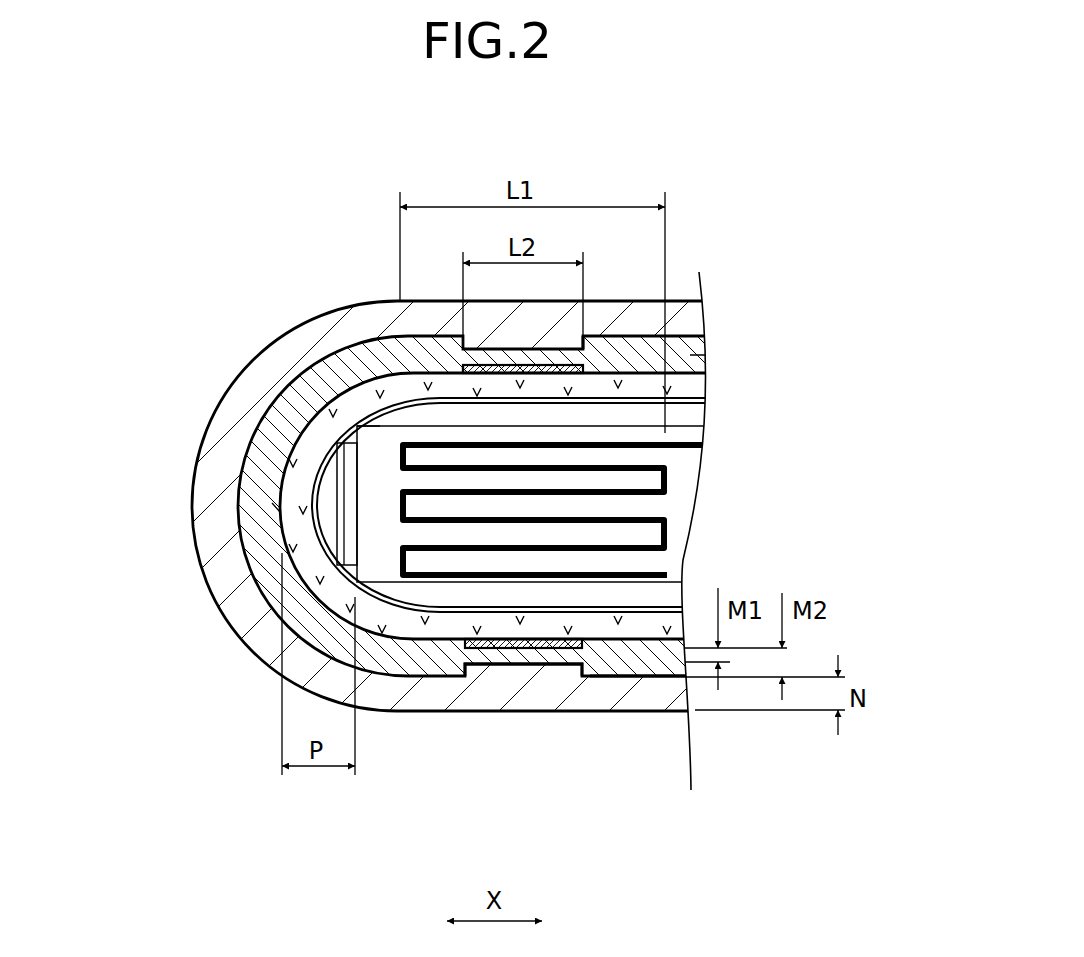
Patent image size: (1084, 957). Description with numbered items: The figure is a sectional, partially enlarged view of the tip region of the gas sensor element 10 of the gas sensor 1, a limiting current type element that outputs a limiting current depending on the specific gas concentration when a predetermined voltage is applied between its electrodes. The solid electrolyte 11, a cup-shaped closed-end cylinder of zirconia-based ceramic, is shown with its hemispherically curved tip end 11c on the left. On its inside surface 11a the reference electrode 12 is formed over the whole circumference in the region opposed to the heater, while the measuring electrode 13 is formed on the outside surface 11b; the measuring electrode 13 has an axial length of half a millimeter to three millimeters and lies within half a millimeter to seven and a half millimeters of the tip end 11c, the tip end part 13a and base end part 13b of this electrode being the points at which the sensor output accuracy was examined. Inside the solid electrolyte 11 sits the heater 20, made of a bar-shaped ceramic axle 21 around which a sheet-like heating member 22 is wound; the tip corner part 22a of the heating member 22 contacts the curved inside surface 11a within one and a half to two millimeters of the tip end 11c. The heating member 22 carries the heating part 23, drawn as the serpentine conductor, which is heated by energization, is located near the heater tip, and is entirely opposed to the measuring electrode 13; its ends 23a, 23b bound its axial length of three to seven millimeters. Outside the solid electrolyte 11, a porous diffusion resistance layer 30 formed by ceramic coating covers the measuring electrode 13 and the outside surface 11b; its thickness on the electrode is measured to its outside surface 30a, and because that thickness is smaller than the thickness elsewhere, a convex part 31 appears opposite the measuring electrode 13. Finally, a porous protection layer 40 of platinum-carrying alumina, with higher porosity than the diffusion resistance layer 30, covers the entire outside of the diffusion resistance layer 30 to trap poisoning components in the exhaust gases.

The gas sensor 1 is at (750, 212).
The gas sensor element 10 is at (779, 462).
The solid electrolyte 11 is at (487, 458).
The inside surface 11a is at (690, 403).
The outside surface 11b is at (707, 357).
The tip end 11c is at (277, 507).
The reference electrode 12 is at (635, 399).
The measuring electrode 13 is at (499, 470).
The tip end part 13a is at (463, 366).
The outside surface of the measuring electrode 13b is at (587, 348).
The heater 20 is at (485, 528).
The axle 21 is at (350, 497).
The heating member 22 is at (417, 430).
The tip corner part 22a is at (370, 424).
The heating part 23 is at (544, 528).
The first end of folded electrode 23a is at (393, 450).
The second end of folded electrode 23b is at (667, 473).
The diffusion resistance layer 30 is at (451, 596).
The outside surface of the diffusion resistance layer 30a is at (660, 677).
The convex part 31 is at (517, 665).
The protection layer 40 is at (237, 410).